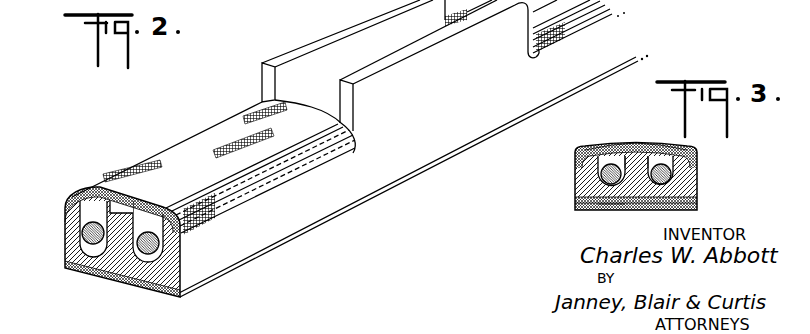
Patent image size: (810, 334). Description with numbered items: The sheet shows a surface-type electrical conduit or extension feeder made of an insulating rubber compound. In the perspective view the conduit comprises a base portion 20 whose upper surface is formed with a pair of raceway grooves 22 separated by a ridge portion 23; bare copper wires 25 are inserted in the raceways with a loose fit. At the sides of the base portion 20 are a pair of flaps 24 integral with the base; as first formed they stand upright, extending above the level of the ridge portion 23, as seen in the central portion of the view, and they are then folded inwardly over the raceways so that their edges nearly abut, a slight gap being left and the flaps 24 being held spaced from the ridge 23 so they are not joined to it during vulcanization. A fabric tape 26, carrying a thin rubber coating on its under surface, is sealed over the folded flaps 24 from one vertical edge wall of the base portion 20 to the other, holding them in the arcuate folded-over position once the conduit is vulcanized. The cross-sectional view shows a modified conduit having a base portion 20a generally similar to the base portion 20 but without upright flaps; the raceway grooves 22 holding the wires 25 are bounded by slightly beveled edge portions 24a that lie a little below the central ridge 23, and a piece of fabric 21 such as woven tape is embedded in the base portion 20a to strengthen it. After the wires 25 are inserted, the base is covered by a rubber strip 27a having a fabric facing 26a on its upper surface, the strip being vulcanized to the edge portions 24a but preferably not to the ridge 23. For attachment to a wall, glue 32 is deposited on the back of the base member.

In FIG. 2, the base portion 20 is at (118, 272).
In FIG. 3, the base portion 20a is at (633, 210).
In FIG. 3, the piece of fabric 21 is at (608, 211).
In FIG. 2, the raceway grooves 22 is at (69, 199).
In FIG. 3, the raceway grooves 22 is at (597, 157).
In FIG. 2, the ridge portion 23 is at (128, 213).
In FIG. 3, the ridge portion 23 is at (634, 157).
In FIG. 2, the flaps 24 is at (96, 187).
In FIG. 3, the edge portions 24a is at (600, 163).
In FIG. 2, the bare wires 25 is at (82, 236).
In FIG. 3, the bare wires 25 is at (636, 174).
In FIG. 2, the fabric tape 26 is at (222, 137).
In FIG. 3, the fabric facing 26a is at (605, 147).
In FIG. 3, the rubber strip 27a is at (657, 147).
In FIG. 2, the glue 32 is at (100, 276).
In FIG. 3, the glue 32 is at (677, 209).